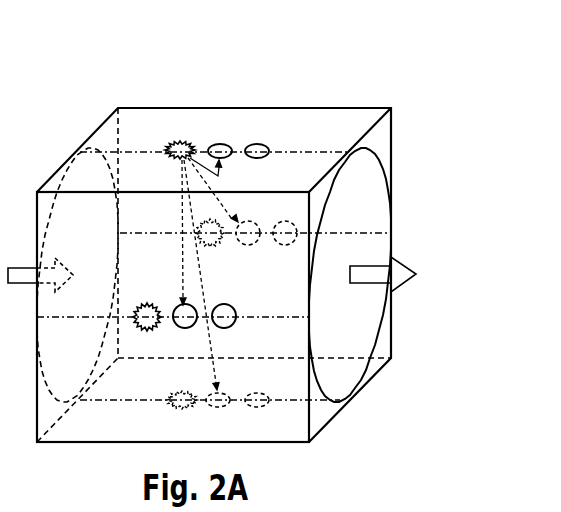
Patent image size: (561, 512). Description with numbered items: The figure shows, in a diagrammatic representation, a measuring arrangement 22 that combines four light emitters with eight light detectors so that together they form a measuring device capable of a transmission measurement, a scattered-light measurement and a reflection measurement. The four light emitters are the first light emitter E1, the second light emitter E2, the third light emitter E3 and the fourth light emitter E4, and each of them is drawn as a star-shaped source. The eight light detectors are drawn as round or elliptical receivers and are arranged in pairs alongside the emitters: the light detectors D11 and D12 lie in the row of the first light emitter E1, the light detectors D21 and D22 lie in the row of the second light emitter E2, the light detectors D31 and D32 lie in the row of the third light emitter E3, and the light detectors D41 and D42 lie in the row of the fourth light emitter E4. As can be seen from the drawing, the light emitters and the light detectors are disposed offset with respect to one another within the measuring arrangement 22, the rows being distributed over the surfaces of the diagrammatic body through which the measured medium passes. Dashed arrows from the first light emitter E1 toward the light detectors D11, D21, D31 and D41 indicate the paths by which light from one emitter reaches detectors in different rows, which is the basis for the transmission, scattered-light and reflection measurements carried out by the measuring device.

The measuring arrangement 22 is at (150, 168).
The light emitter E1 is at (201, 254).
The light detector D11 is at (217, 138).
The light detector D12 is at (259, 138).
The light emitter E4 is at (210, 246).
The light detector D41 is at (249, 247).
The light detector D42 is at (288, 247).
The light emitter E2 is at (147, 329).
The light detector D21 is at (185, 330).
The light detector D22 is at (231, 330).
The light emitter E3 is at (182, 414).
The light detector D31 is at (215, 415).
The light detector D32 is at (260, 415).